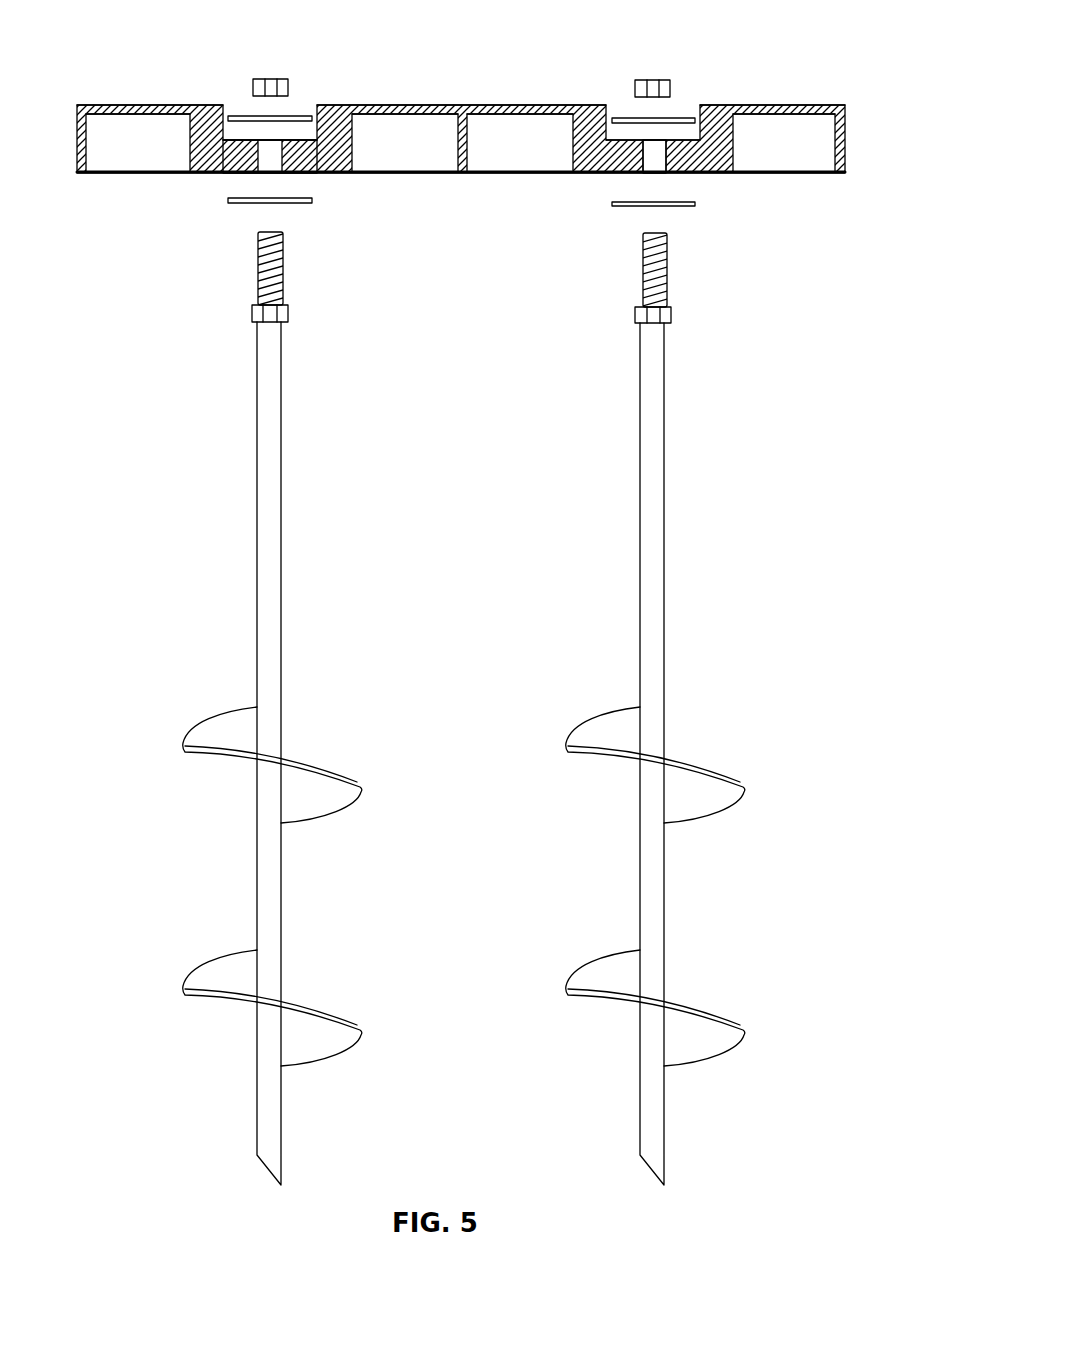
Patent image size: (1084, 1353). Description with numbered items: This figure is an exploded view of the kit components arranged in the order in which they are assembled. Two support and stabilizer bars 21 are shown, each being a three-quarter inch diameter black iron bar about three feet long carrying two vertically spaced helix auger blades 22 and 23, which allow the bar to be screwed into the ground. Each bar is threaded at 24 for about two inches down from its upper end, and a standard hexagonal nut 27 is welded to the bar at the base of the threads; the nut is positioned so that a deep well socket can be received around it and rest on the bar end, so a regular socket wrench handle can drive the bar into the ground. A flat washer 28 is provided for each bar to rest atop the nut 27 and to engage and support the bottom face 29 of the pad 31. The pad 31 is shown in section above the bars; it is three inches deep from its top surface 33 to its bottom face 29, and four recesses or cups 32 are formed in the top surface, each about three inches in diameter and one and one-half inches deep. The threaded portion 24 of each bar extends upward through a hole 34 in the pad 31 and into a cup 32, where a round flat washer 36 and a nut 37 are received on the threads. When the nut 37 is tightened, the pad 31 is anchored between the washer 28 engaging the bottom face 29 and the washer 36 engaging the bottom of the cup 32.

The support and stabilizer bar 21 is at (682, 488).
The helix auger blade 22 is at (613, 745).
The helix auger blade 23 is at (611, 977).
The threaded portion 24 is at (285, 267).
The hexagonal nut 27 is at (640, 315).
The flat washer 28 is at (695, 203).
The bottom face of the pad 29 is at (227, 163).
The pad 31 is at (862, 141).
The recess or cup 32 is at (295, 130).
The top surface of the pad 33 is at (798, 106).
The hole 34 is at (655, 162).
The round flat washer 36 is at (623, 117).
The nut 37 is at (652, 85).